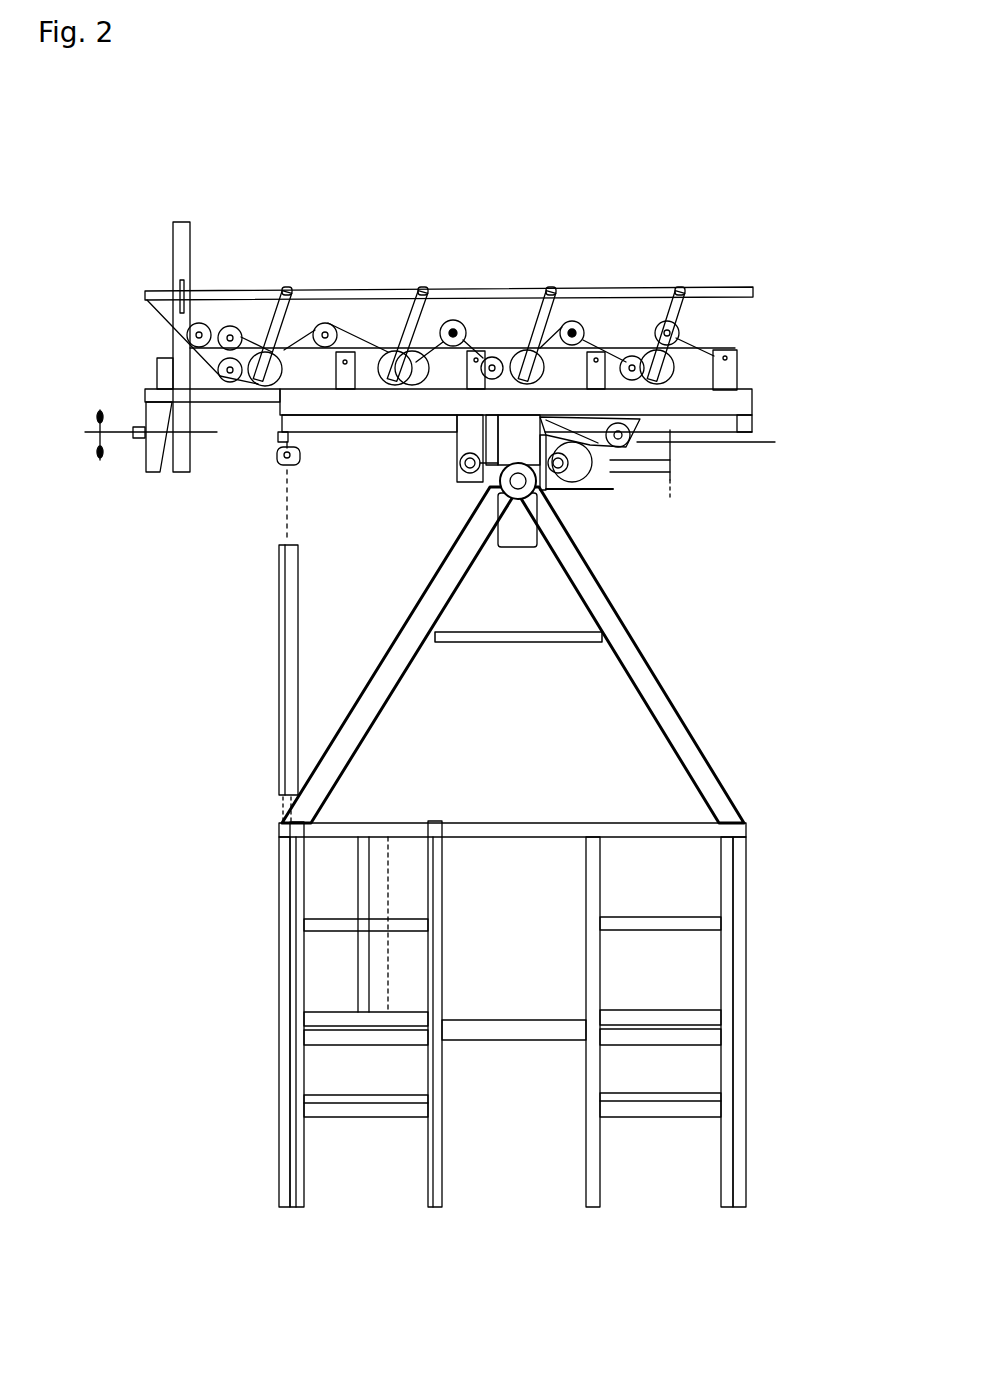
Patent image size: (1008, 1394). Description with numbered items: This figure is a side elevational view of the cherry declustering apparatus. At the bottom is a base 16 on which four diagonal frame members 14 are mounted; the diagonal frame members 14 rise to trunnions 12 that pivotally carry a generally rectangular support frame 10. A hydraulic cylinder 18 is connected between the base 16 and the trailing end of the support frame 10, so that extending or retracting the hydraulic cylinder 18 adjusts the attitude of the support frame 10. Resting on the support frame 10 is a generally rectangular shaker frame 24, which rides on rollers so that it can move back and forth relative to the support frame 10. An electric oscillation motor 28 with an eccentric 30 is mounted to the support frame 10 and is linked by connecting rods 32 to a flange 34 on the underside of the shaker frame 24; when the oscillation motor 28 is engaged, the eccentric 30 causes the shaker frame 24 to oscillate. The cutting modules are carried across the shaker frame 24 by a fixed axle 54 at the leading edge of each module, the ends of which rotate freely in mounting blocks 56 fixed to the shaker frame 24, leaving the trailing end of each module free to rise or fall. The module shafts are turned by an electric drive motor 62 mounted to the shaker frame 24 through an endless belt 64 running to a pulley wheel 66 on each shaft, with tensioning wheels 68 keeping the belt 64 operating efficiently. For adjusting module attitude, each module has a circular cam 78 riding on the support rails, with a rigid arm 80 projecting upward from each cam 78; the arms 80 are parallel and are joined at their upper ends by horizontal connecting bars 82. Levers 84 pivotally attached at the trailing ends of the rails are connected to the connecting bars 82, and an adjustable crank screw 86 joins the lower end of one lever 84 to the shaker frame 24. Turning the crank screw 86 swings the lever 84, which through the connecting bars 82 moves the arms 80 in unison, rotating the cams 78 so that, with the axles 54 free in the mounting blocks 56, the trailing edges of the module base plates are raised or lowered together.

The support frame 10 is at (752, 413).
The trunnions 12 is at (560, 497).
The diagonal frame members 14 is at (680, 718).
The base 16 is at (746, 1016).
The hydraulic cylinder 18 is at (279, 683).
The shaker frame 24 is at (245, 392).
The oscillation motor 28 is at (650, 480).
The eccentric 30 is at (587, 473).
The connecting rods 32 is at (470, 476).
The flange 34 is at (468, 442).
The fixed axle 54 is at (730, 348).
The mounting block 56 is at (723, 373).
The drive motor 62 is at (723, 450).
The endless belt 64 is at (660, 417).
The pulley wheel 66 is at (270, 352).
The tensioning wheels 68 is at (145, 292).
The circular cam 78 is at (238, 328).
The rigid arm 80 is at (284, 287).
The connecting bars 82 is at (313, 289).
The levers 84 is at (190, 348).
The crank screw 86 is at (97, 460).